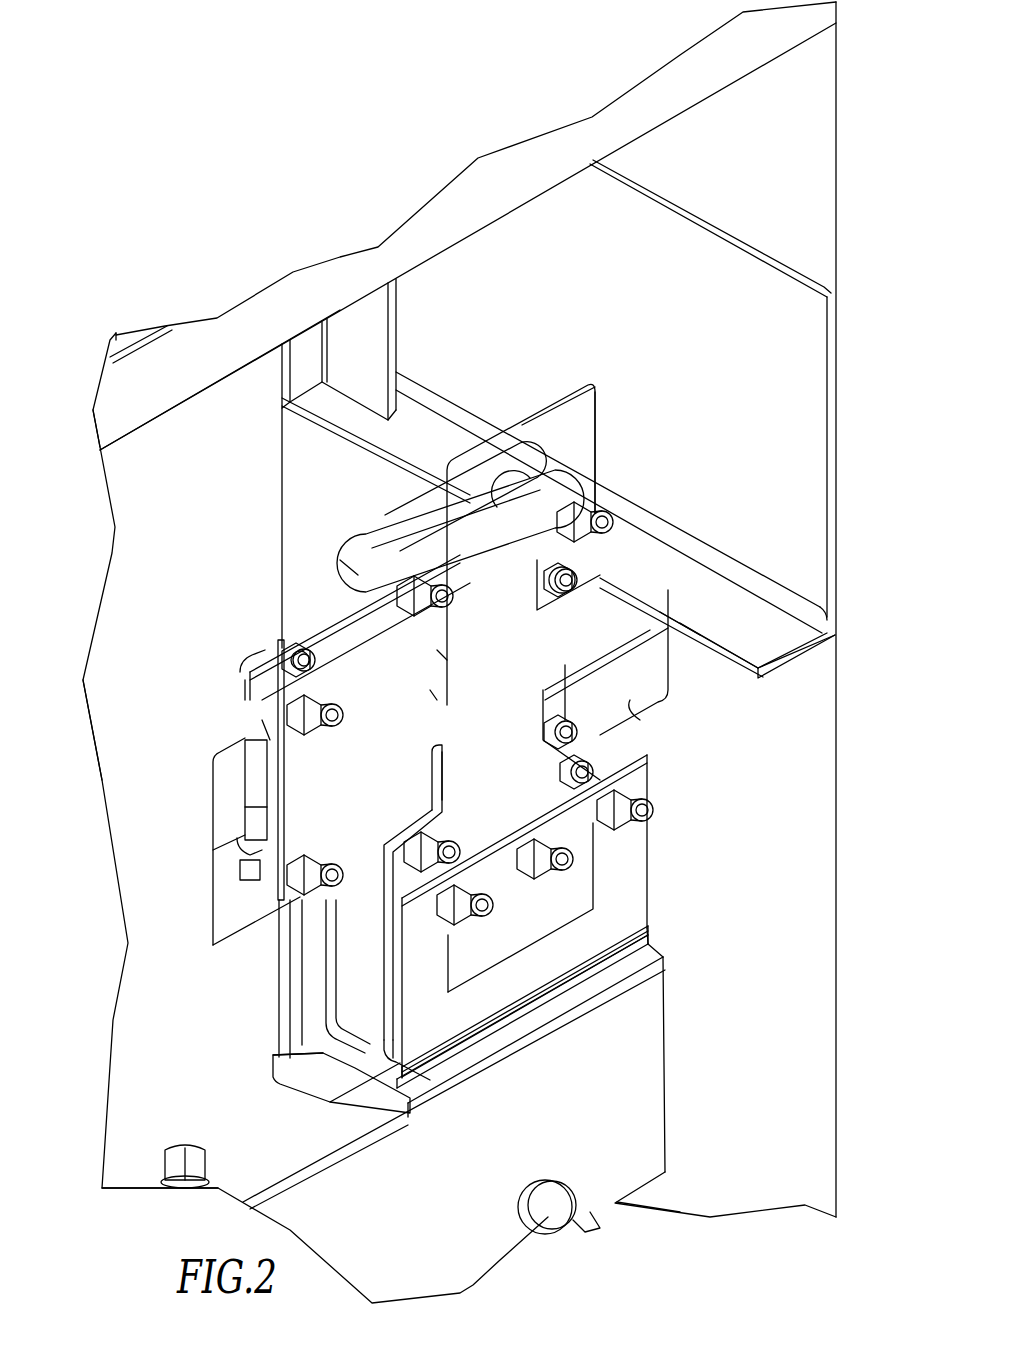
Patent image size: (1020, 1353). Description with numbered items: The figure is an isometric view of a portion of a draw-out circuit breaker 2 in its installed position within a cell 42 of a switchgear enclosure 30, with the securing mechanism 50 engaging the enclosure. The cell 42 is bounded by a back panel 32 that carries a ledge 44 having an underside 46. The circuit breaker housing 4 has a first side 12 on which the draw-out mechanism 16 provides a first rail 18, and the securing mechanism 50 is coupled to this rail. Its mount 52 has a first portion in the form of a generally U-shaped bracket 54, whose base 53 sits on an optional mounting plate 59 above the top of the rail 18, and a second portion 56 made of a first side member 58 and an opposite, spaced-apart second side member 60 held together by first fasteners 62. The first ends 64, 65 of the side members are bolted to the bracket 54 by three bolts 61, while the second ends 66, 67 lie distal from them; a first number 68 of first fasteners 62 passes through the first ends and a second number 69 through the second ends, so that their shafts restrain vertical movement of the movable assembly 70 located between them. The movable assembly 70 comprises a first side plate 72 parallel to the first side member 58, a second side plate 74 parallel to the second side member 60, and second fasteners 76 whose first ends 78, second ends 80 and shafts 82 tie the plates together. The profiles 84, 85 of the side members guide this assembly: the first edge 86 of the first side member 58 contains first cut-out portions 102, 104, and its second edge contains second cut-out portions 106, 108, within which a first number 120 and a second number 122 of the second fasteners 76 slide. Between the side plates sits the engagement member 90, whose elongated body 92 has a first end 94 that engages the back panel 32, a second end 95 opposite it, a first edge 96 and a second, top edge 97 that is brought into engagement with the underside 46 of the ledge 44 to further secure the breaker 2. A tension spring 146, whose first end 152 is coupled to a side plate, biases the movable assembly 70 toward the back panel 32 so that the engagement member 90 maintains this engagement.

The draw-out circuit breaker 2 is at (100, 775).
The housing 4 is at (127, 555).
The first side 12 is at (162, 625).
The draw-out mechanism 16 is at (680, 1095).
The first rail 18 is at (413, 1196).
The switchgear enclosure 30 is at (265, 218).
The back panel 32 is at (769, 184).
The cell 42 is at (180, 447).
The ledge 44 is at (705, 655).
The underside of the ledge 46 is at (766, 668).
The securing mechanism 50 is at (735, 870).
The mount 52 is at (338, 995).
The base 53 is at (340, 1110).
The generally U-shaped bracket 54 is at (340, 1097).
The second portion 56 is at (375, 540).
The first side member 58 is at (514, 651).
The mounting plate 59 is at (390, 1083).
The second side member 60 is at (465, 500).
The bolts 61 is at (617, 840).
The first fasteners 62 is at (437, 592).
The first end of the first side member 64 is at (387, 947).
The first end of the second side member 65 is at (340, 920).
The second end of the first side member 66 is at (583, 458).
The second end of the second side member 67 is at (337, 562).
The first number of first fasteners 68 is at (527, 950).
The second number of first fasteners 69 is at (507, 437).
The movable assembly 70 is at (270, 597).
The first side plate 72 is at (331, 806).
The second side plate 74 is at (323, 647).
The second fasteners 76 is at (590, 565).
The first ends 78 is at (535, 593).
The second ends 80 is at (250, 660).
The shafts 82 is at (240, 688).
The profile of the first side member 84 is at (430, 788).
The profile of the second side member 85 is at (345, 605).
The first edge 86 is at (680, 626).
The engagement member 90 is at (625, 690).
The elongated body 92 is at (243, 790).
The first end of the elongated body 94 is at (663, 648).
The second end of the elongated body 95 is at (243, 807).
The first edge of the elongated body 96 is at (245, 843).
The second edge of the elongated body 97 is at (270, 740).
The first cut-out portion 102 is at (540, 697).
The first cut-out portion 104 is at (540, 560).
The second cut-out portion 106 is at (440, 755).
The second cut-out portion 108 is at (437, 653).
The first number of second fasteners 120 is at (686, 608).
The second number of second fasteners 122 is at (213, 853).
The tension spring 146 is at (340, 582).
The first end of the tension spring 152 is at (441, 706).